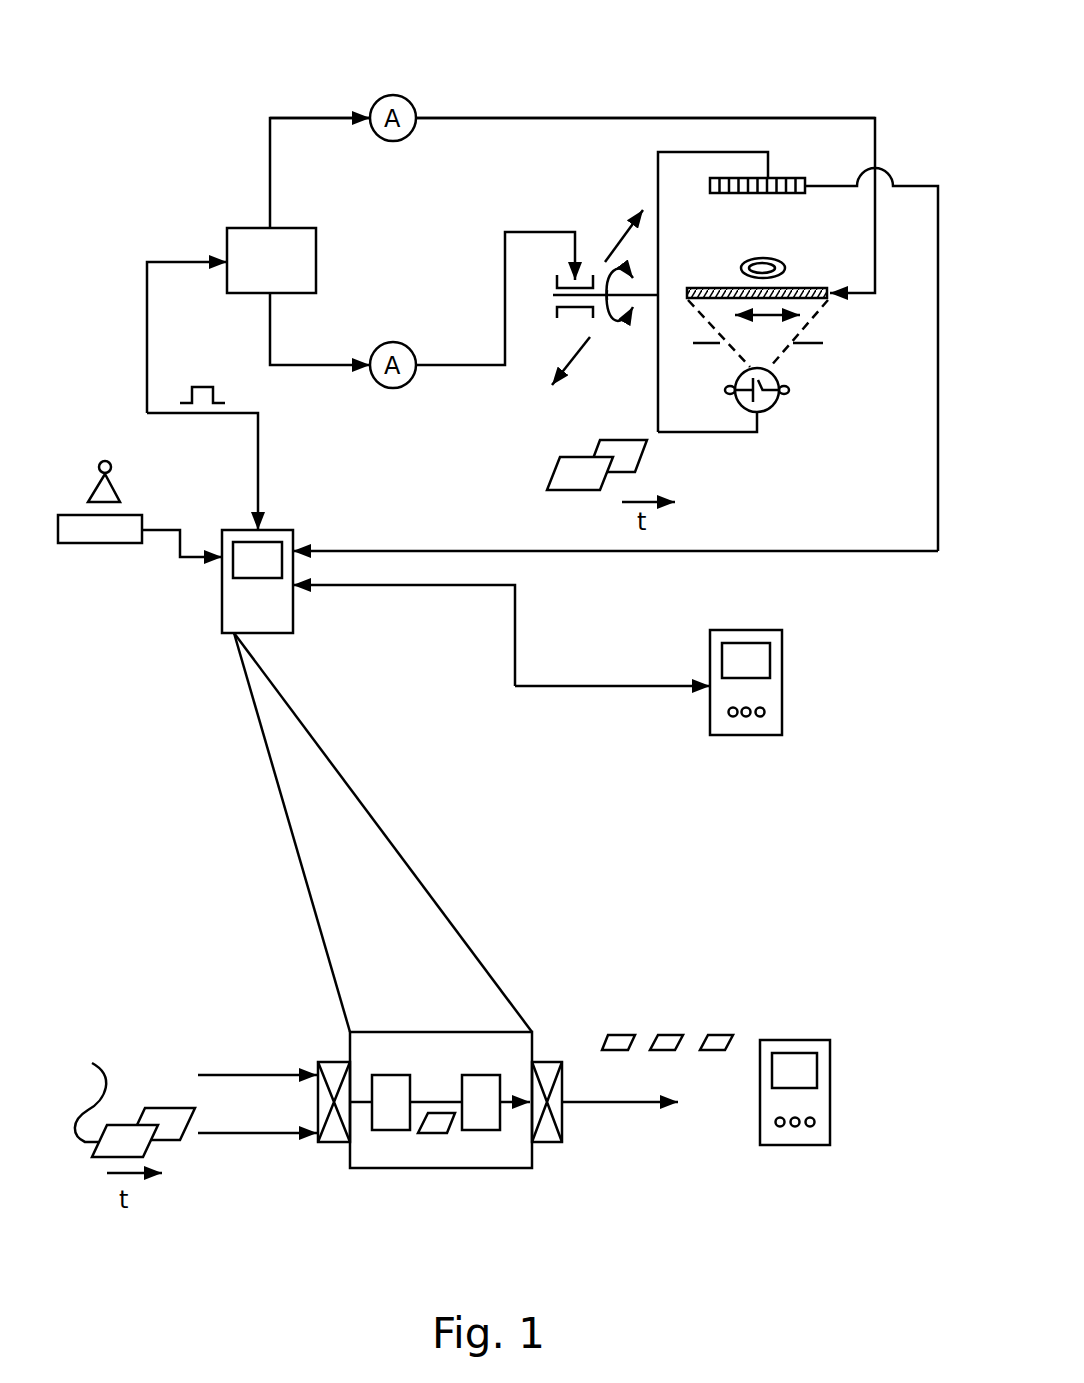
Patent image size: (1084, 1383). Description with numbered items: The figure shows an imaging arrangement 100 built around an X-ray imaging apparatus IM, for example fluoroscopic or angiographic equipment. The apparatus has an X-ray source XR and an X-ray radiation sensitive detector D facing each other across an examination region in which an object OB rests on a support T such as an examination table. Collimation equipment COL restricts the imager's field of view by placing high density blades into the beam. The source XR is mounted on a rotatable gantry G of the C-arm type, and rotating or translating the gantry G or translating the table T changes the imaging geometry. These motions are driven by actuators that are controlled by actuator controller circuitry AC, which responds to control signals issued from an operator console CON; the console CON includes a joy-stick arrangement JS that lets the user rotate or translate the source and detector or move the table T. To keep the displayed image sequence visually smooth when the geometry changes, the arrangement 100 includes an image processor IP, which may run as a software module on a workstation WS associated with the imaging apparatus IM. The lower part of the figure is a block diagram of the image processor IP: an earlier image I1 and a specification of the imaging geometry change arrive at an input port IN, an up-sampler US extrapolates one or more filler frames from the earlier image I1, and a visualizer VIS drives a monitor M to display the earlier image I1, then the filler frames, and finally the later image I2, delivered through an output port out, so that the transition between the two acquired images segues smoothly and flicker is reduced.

The imaging arrangement 100 is at (293, 97).
The imaging apparatus IM is at (688, 97).
The X-ray radiation sensitive detector D is at (797, 175).
The actuator controller circuitry AC is at (242, 238).
The rotatable gantry G is at (657, 185).
The object OB is at (752, 262).
The support T is at (832, 302).
The X-ray source XR is at (778, 390).
The collimation equipment COL is at (822, 350).
The joy-stick arrangement JS is at (117, 480).
The operator console CON is at (73, 530).
The image processor IP is at (243, 570).
The workstation WS is at (278, 593).
The earlier image I1 is at (563, 470).
The later image I2 is at (643, 462).
The monitor M is at (837, 1060).
The input port IN is at (338, 1155).
The up-sampler US is at (393, 1117).
The visualizer VIS is at (487, 1117).
The output port out is at (548, 1055).